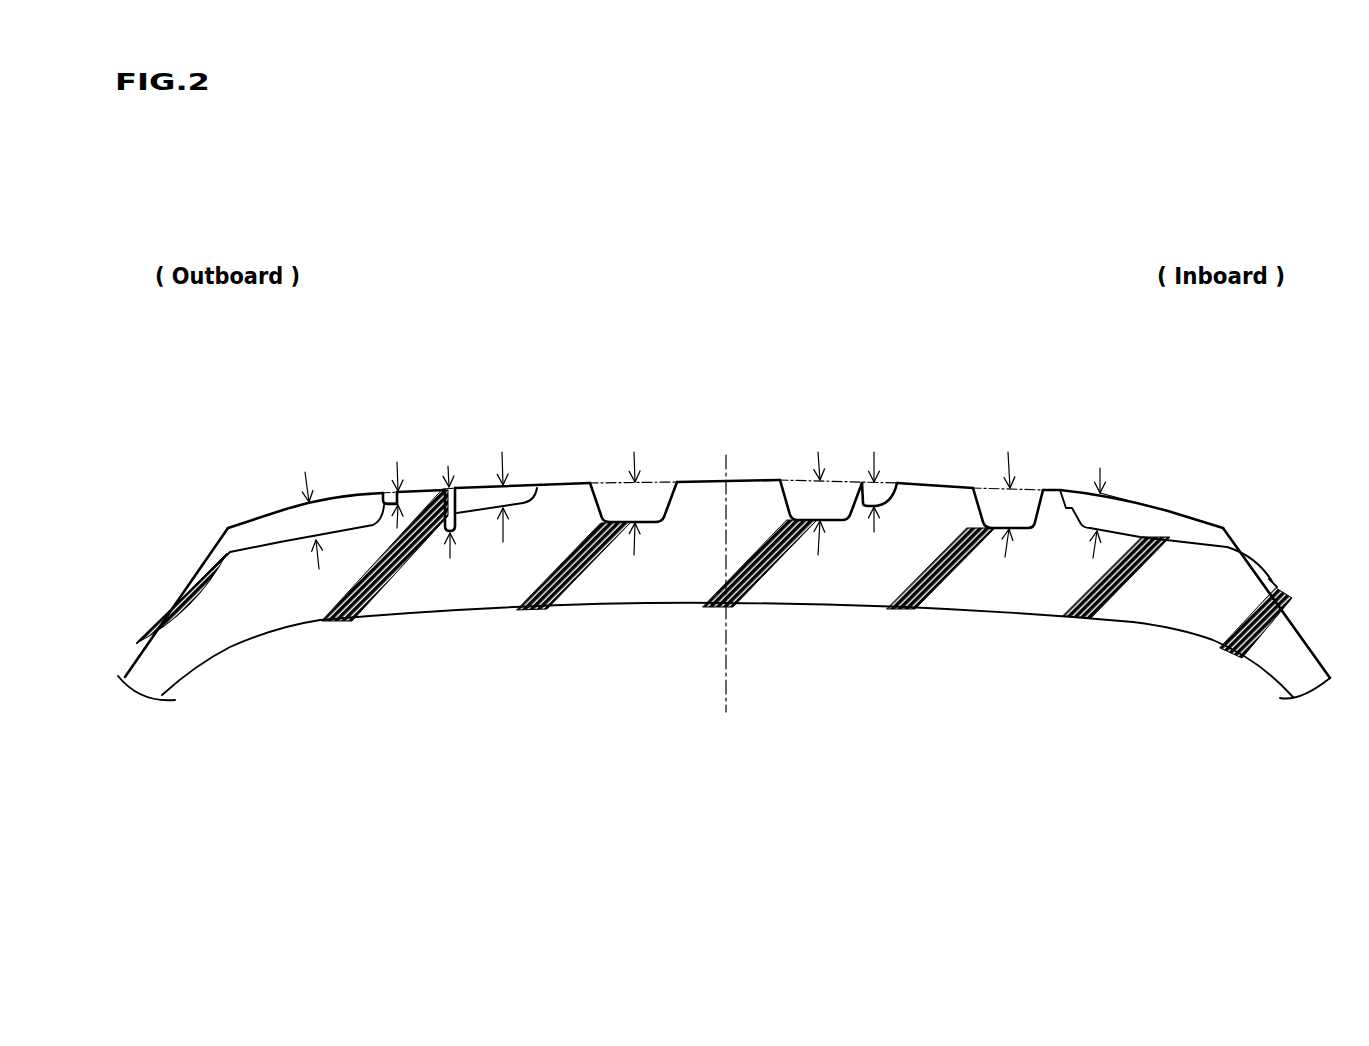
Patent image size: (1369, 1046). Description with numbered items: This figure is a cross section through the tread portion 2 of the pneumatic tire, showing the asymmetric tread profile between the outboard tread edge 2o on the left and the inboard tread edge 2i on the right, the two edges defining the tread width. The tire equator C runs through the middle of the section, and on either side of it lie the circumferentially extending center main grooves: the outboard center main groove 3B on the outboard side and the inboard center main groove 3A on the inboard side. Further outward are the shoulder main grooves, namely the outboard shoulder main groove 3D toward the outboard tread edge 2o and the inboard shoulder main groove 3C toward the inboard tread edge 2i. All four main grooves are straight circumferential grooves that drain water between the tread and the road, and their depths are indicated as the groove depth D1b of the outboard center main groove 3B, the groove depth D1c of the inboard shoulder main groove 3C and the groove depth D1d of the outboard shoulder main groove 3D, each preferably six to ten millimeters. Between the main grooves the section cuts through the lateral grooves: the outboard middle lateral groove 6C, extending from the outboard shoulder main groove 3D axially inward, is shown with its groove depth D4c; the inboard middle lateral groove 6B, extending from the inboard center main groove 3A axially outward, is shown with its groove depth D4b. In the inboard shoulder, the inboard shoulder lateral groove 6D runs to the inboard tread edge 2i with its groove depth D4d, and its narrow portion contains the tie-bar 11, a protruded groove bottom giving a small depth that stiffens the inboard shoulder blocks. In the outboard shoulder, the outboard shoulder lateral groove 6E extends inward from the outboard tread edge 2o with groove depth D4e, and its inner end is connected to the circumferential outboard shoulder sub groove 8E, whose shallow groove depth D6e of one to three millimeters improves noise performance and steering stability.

The tread portion 2 is at (714, 478).
The outboard tread edge 2o is at (226, 526).
The inboard tread edge 2i is at (1226, 527).
The inboard center main groove 3A is at (807, 505).
The outboard center main groove 3B is at (617, 505).
The inboard shoulder main groove 3C is at (994, 505).
The outboard shoulder main groove 3D is at (447, 505).
The inboard middle lateral groove 6B is at (874, 502).
The outboard middle lateral groove 6C is at (480, 507).
The inboard shoulder lateral groove 6D is at (1165, 535).
The outboard shoulder lateral groove 6E is at (284, 530).
The outboard shoulder sub groove 8E is at (386, 503).
The tie-bar 11 is at (1064, 505).
The tire equator C is at (727, 571).
The groove depth of outboard shoulder lateral groove D4e is at (303, 540).
The groove depth of outboard shoulder sub groove D6e is at (400, 508).
The groove depth of outboard shoulder main groove D1d is at (446, 535).
The groove depth of outboard middle lateral groove D4c is at (504, 508).
The groove depth of outboard center main groove D1b is at (637, 523).
The groove depth of inboard middle lateral groove D4b is at (875, 504).
The groove depth of inboard shoulder main groove D1c is at (1008, 510).
The groove depth of inboard shoulder lateral groove D4d is at (1100, 530).